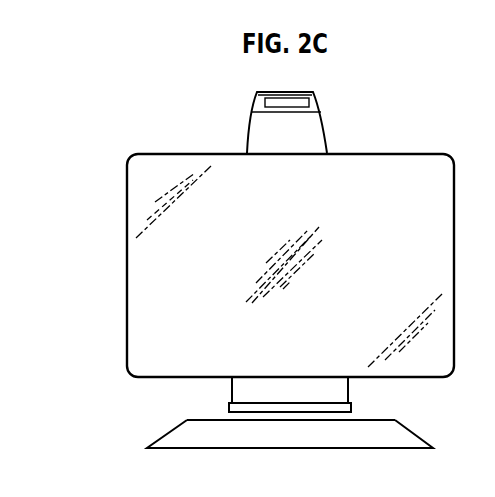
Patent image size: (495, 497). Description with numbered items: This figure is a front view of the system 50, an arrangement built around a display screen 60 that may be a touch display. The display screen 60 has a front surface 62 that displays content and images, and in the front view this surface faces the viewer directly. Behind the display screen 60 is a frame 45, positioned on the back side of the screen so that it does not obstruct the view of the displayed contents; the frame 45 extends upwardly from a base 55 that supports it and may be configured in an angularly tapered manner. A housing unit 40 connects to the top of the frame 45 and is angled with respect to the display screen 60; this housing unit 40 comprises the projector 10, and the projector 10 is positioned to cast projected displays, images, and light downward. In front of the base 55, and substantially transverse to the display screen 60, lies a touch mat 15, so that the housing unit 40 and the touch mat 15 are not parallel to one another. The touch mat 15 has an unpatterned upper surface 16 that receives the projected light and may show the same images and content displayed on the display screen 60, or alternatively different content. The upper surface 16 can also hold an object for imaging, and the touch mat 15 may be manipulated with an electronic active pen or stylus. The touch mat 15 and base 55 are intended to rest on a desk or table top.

The system 50 is at (78, 152).
The display screen 60 is at (127, 217).
The front surface 62 is at (443, 183).
The projector 10 is at (258, 100).
The housing unit 40 is at (313, 93).
The frame 45 is at (252, 123).
The base 55 is at (229, 409).
The touch mat 15 is at (160, 436).
The upper surface 16 is at (390, 443).